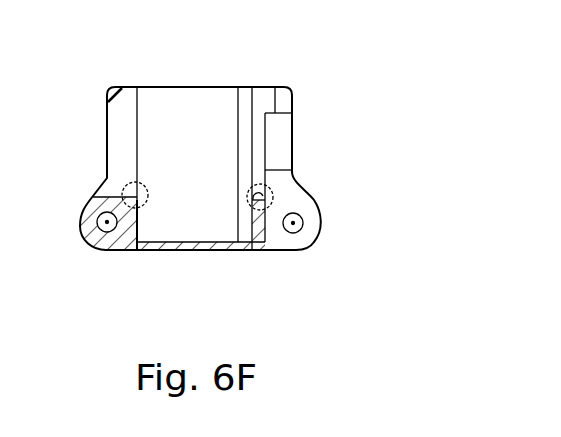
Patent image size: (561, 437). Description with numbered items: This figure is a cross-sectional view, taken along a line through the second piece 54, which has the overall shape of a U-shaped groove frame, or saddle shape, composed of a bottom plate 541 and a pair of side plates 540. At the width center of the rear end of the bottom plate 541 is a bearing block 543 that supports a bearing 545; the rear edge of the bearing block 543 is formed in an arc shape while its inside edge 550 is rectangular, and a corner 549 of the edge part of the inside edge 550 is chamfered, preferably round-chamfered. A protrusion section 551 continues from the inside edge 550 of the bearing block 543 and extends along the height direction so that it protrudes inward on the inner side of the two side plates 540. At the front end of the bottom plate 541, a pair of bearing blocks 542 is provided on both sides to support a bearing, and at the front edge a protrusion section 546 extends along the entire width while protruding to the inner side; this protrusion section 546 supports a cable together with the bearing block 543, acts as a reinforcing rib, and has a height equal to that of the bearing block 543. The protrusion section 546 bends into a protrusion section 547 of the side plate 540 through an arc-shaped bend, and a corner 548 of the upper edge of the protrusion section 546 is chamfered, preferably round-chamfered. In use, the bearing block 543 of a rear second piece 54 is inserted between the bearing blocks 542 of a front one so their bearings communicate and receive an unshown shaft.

The second piece 54 is at (206, 159).
The side plates 540 is at (207, 87).
The bottom plate 541 is at (236, 252).
The bearing blocks 542 is at (304, 226).
The bearing block 543 is at (106, 252).
The bearing 545 is at (105, 223).
The protrusion section 546 is at (266, 236).
The protrusion section 547 is at (266, 130).
The corner 548 is at (273, 197).
The corner 549 is at (124, 193).
The inside edge 550 is at (140, 228).
The protrusion section 551 is at (138, 118).